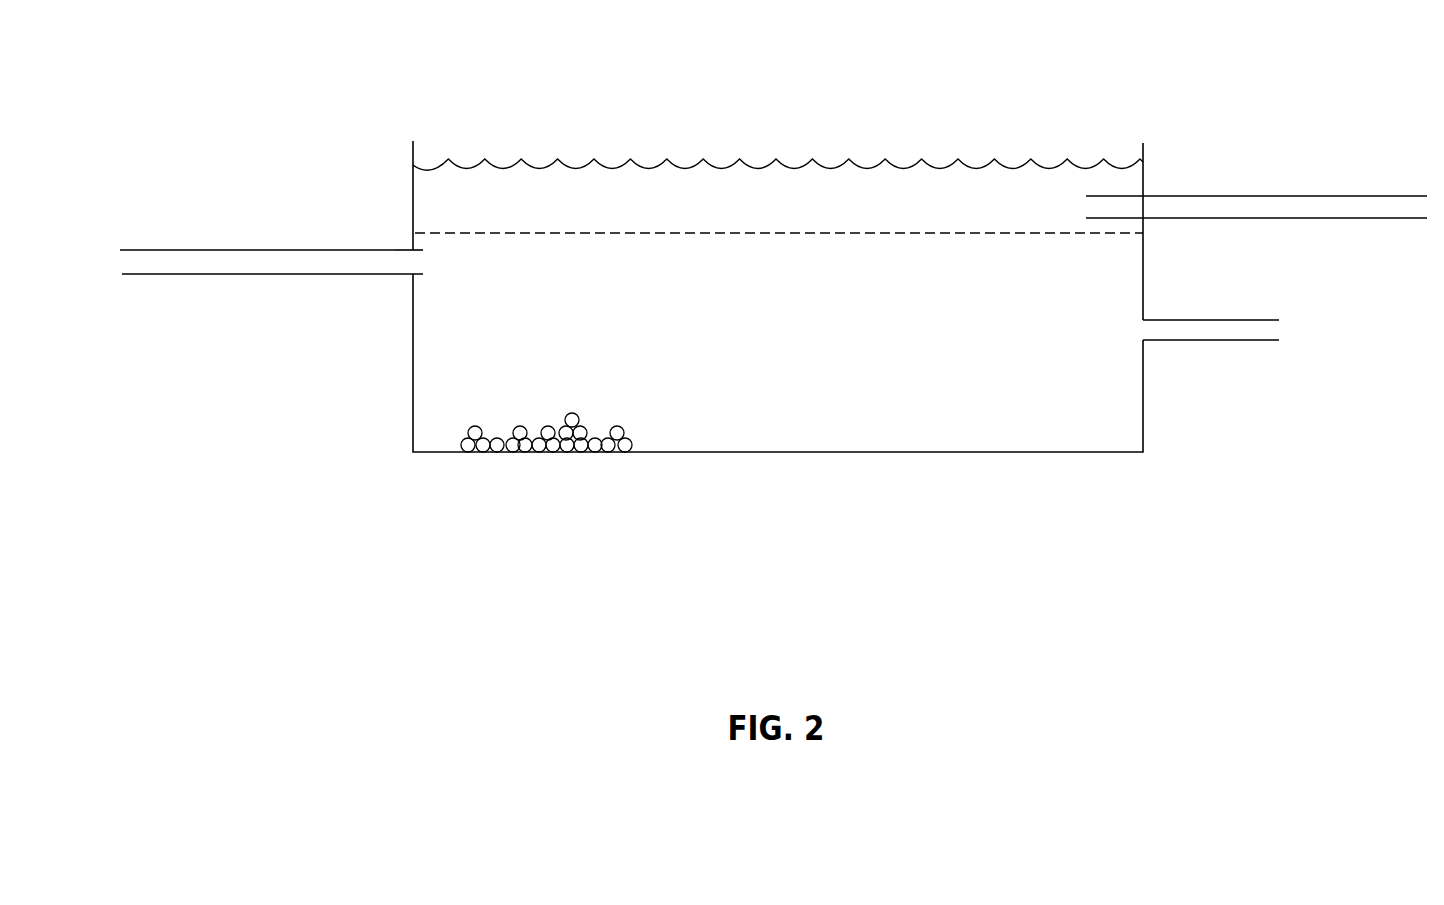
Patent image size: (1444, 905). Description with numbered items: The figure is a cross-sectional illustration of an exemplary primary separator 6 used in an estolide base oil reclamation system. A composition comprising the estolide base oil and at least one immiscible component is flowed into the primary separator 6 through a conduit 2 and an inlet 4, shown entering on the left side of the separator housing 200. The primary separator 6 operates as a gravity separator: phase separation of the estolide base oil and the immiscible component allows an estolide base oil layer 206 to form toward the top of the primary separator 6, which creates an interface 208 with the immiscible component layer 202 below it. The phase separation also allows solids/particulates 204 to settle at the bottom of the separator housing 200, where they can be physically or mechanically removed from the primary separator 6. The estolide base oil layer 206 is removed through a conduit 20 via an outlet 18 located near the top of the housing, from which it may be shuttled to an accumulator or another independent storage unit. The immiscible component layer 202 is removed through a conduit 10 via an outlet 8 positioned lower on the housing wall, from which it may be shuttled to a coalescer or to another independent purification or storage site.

The conduit 2 is at (217, 276).
The inlet 4 is at (395, 258).
The primary separator 6 is at (360, 48).
The outlet 8 is at (1160, 333).
The conduit 10 is at (1252, 343).
The outlet 18 is at (1162, 207).
The conduit 20 is at (1312, 195).
The separator housing 200 is at (937, 453).
The immiscible component layer 202 is at (1038, 352).
The solids/particulates 204 is at (594, 409).
The estolide base oil layer 206 is at (568, 220).
The interface 208 is at (826, 219).